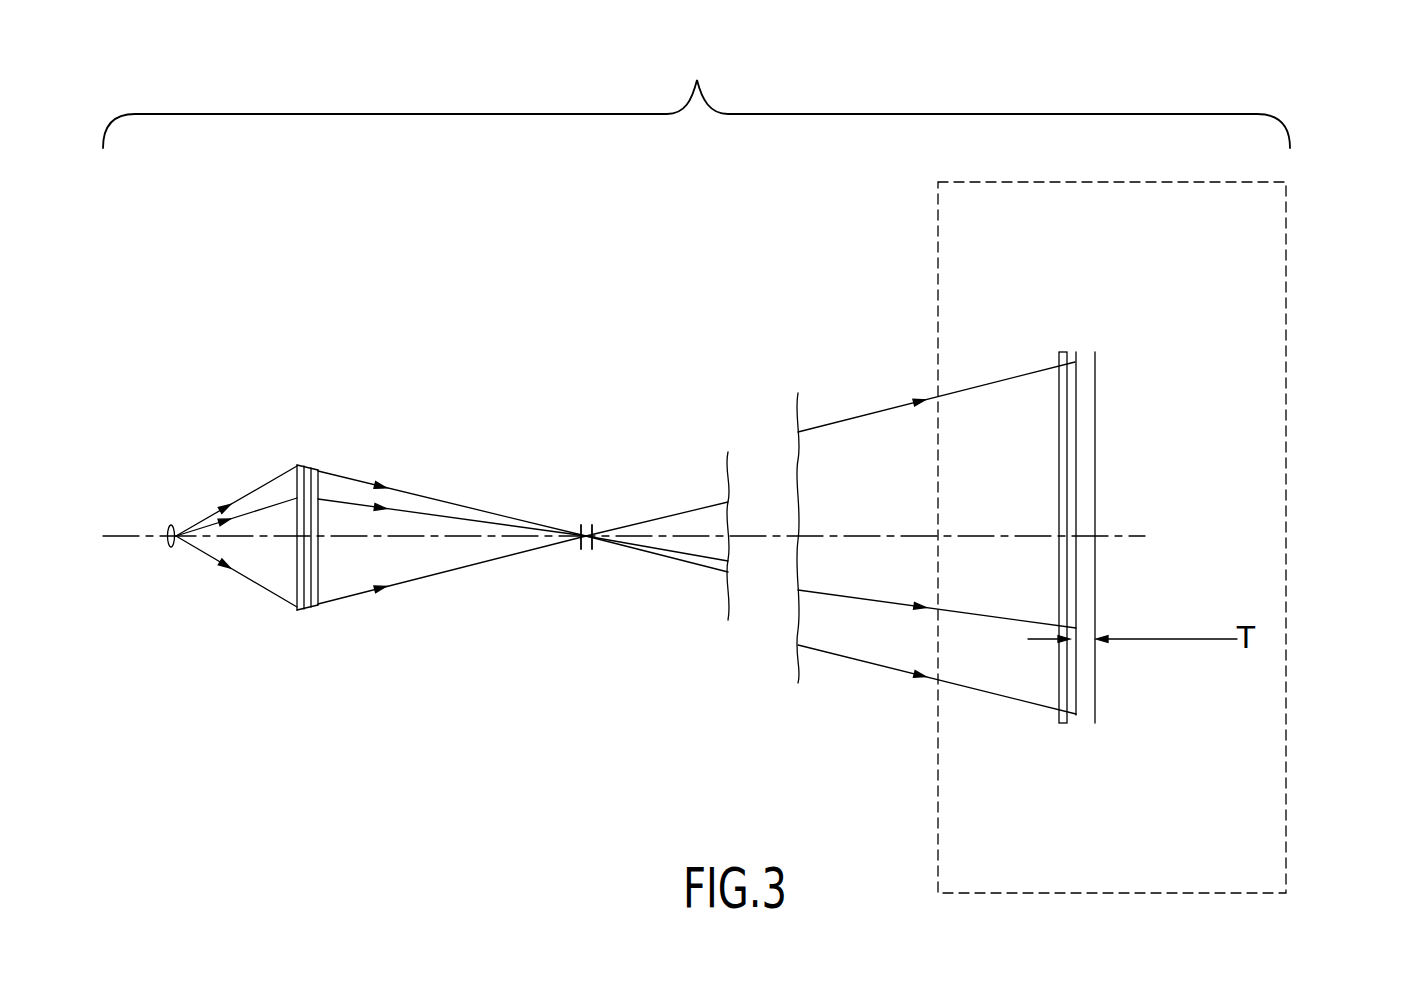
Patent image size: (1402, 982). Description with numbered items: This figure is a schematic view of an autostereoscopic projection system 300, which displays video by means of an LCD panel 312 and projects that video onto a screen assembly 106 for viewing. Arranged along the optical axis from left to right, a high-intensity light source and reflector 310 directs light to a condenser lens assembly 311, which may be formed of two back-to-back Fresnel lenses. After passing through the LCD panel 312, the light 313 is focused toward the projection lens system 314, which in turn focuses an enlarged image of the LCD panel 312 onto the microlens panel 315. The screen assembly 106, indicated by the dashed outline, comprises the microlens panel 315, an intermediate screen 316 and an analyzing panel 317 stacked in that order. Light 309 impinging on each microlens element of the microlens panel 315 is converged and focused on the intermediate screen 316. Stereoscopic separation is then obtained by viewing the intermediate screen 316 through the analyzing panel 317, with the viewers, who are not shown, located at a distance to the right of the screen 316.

The projection system 300 is at (696, 92).
The screen assembly 106 is at (1284, 490).
The light 309 is at (937, 538).
The high-intensity light source and reflector 310 is at (178, 527).
The condenser lens assembly 311 is at (295, 465).
The LCD panel 312 is at (317, 472).
The converging rays 313 is at (463, 518).
The projection lens system 314 is at (586, 525).
The microlens panel 315 is at (1061, 352).
The intermediate screen 316 is at (1076, 715).
The analyzing panel 317 is at (1095, 502).